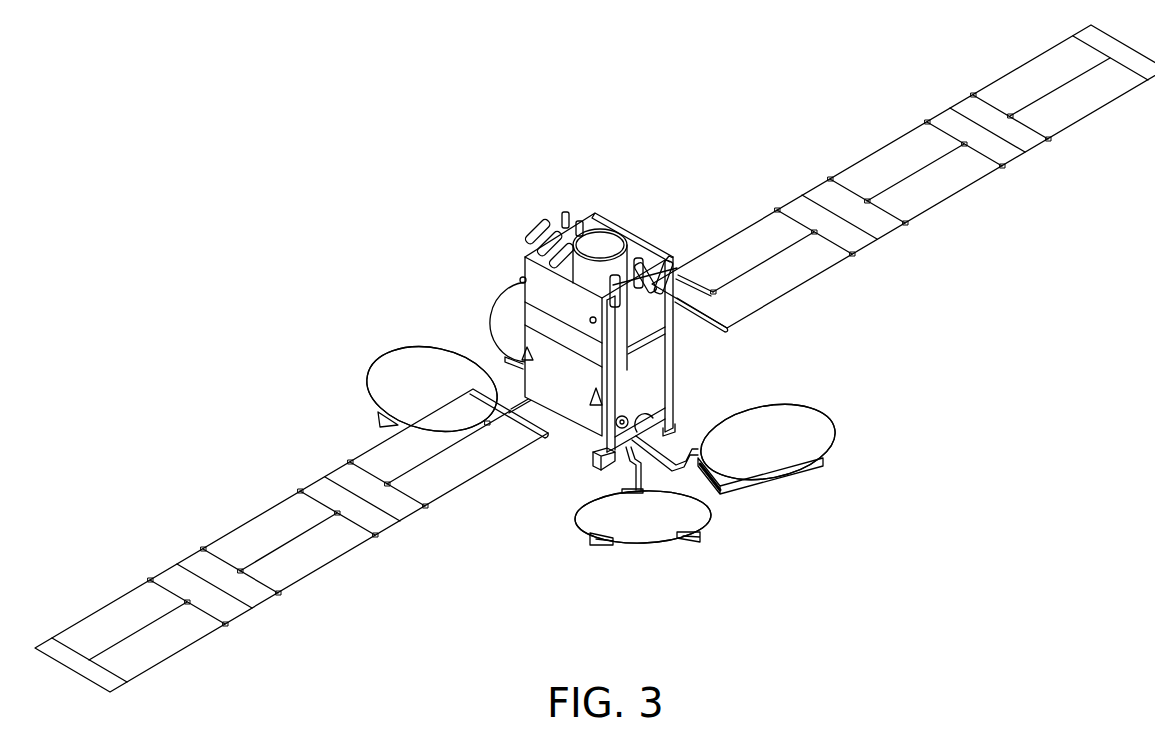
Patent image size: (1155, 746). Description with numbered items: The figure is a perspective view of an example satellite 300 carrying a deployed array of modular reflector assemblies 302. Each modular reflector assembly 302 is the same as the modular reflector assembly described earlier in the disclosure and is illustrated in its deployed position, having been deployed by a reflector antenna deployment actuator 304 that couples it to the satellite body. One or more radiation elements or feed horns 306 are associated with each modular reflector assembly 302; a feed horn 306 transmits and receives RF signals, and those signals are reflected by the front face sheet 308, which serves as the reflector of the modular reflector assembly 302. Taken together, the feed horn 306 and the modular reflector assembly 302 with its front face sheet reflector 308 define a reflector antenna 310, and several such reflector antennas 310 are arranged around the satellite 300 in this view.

The satellite 300 is at (497, 170).
The modular reflector assembly 302 is at (493, 300).
The reflector antenna deployment actuator (RADA) 304 is at (658, 458).
The feed horn 306 is at (565, 224).
The front face sheet 308 is at (510, 288).
The reflector antenna 310 is at (473, 313).